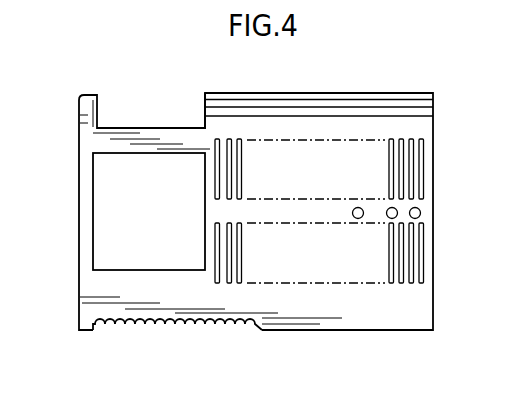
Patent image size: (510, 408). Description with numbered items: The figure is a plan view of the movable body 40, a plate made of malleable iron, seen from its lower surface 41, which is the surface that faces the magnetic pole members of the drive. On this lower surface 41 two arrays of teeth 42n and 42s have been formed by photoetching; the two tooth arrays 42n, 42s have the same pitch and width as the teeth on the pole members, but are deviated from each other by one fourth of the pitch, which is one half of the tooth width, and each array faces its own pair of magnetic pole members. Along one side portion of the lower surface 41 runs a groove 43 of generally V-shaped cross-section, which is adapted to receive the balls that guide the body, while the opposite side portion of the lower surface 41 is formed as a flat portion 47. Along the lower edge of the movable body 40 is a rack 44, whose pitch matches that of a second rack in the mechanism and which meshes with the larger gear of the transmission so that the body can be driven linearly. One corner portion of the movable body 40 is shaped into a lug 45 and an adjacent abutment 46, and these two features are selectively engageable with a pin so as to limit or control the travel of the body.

The movable body 40 is at (72, 202).
The lower surface 41 is at (95, 289).
The tooth array 42s is at (413, 170).
The tooth array 42n is at (412, 265).
The groove 43 is at (333, 105).
The rack 44 is at (188, 323).
The lug 45 is at (95, 98).
The abutment 46 is at (205, 115).
The flat portion 47 is at (350, 318).